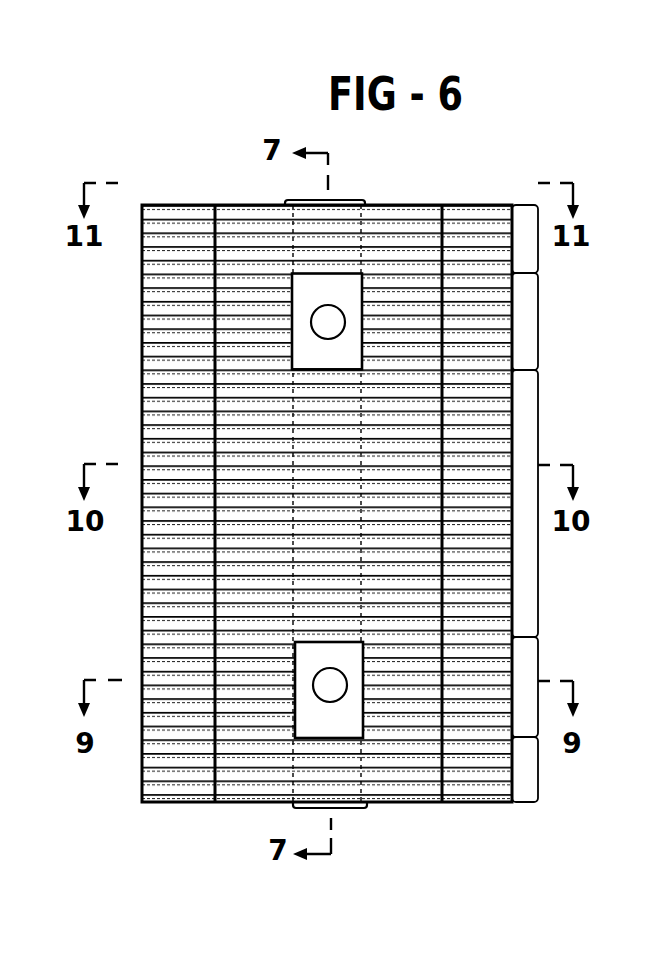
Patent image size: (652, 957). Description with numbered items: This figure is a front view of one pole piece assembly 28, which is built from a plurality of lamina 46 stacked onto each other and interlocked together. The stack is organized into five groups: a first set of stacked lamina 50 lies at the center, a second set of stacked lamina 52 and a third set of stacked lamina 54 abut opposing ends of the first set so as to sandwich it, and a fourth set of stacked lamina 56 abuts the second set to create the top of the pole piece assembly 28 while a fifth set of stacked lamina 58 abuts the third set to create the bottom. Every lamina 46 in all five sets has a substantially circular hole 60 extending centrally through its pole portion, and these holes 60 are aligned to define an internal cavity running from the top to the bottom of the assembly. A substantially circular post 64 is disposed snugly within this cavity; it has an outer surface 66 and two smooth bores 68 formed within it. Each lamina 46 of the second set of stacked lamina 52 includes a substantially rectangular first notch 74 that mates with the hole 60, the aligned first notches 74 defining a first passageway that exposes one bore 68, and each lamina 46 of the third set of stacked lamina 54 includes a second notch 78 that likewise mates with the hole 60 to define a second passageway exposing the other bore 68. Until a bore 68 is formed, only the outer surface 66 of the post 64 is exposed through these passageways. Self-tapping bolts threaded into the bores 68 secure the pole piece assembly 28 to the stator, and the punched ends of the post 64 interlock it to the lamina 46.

The pole piece assembly 28 is at (152, 838).
The lamina 46 is at (152, 405).
The first set of stacked lamina 50 is at (539, 557).
The second set of stacked lamina 52 is at (539, 315).
The third set of stacked lamina 54 is at (539, 651).
The fourth set of stacked lamina 56 is at (539, 248).
The fifth set of stacked lamina 58 is at (539, 770).
The hole 60 is at (361, 240).
The post 64 is at (344, 202).
The outer surface 66 is at (302, 293).
The bore 68 is at (338, 318).
The first notch 74 is at (362, 339).
The second notch 78 is at (360, 710).